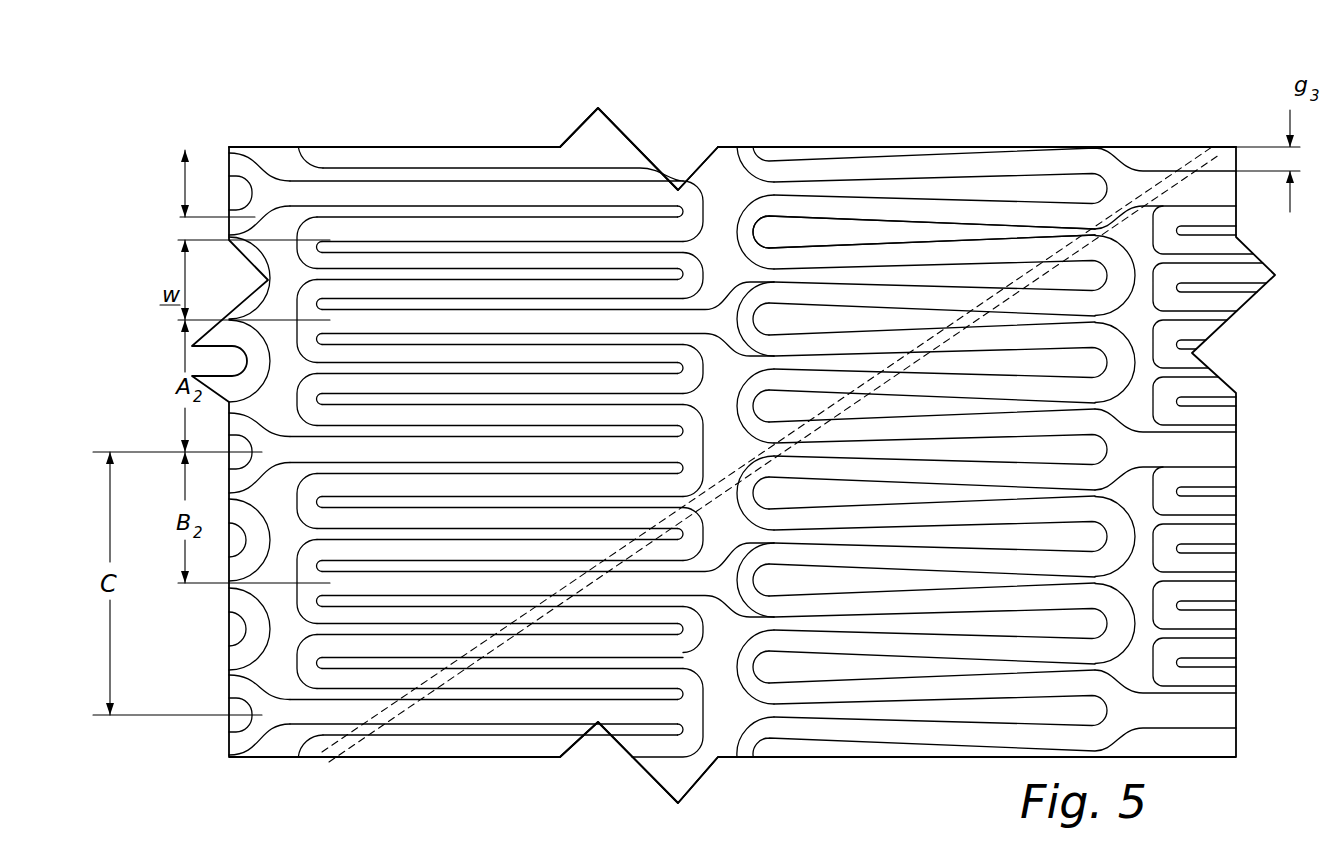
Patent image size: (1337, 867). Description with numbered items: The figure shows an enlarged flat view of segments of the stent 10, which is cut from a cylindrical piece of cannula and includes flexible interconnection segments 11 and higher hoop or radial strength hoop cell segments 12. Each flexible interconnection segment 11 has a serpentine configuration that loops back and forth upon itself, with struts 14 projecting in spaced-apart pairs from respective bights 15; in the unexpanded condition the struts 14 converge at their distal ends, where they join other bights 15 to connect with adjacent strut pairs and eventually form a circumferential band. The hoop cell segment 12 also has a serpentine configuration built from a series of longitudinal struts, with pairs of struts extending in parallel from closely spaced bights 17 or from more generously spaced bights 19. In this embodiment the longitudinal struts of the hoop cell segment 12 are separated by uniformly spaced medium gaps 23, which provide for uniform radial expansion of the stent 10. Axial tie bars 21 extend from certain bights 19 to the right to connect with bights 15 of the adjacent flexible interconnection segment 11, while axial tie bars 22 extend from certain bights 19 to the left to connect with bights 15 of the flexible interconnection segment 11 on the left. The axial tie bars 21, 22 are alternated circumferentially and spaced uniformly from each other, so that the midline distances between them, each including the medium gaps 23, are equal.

The stent 10 is at (300, 118).
The flexible interconnection segment 11 is at (1048, 135).
The hoop cell segment 12 is at (478, 140).
The struts 14 is at (945, 165).
The bight 15 is at (748, 240).
The bight 17 is at (722, 318).
The bight 19 is at (680, 186).
The axial tie bar 21 is at (693, 257).
The axial tie bar 22 is at (548, 190).
The medium gap 23 is at (402, 178).